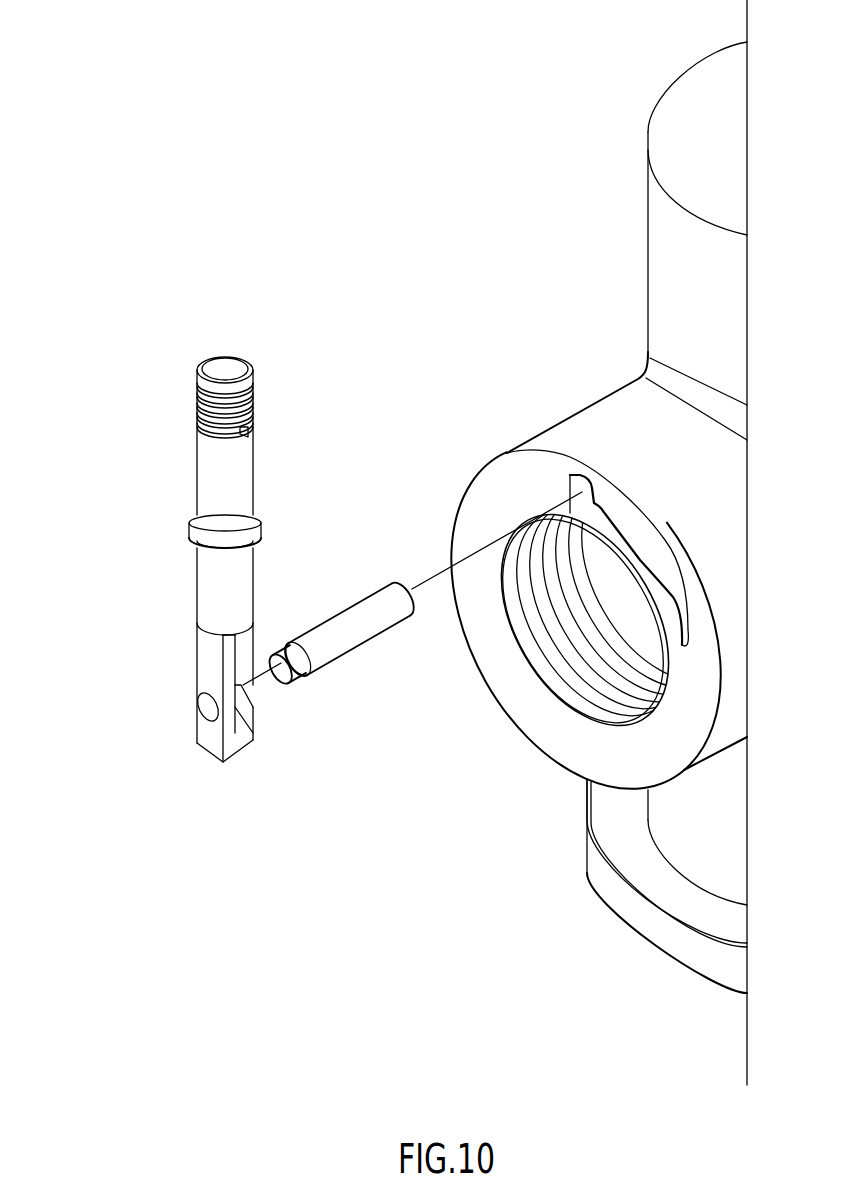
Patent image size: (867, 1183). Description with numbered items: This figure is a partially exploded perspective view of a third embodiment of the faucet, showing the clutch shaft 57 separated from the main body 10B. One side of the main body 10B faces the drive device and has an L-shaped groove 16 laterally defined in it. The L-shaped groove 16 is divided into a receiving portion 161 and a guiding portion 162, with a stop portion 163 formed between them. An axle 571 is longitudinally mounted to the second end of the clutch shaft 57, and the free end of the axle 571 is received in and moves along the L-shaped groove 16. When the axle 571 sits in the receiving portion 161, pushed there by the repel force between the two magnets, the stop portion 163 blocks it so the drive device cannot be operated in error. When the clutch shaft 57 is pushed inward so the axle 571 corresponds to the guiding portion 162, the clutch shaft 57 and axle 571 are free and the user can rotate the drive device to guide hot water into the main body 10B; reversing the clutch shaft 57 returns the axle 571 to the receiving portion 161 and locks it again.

The main body 10B is at (576, 161).
The L-shaped groove 16 is at (609, 525).
The receiving portion 161 is at (580, 491).
The guiding portion 162 is at (650, 567).
The stop portion 163 is at (597, 499).
The clutch shaft 57 is at (183, 477).
The axle 571 is at (350, 653).